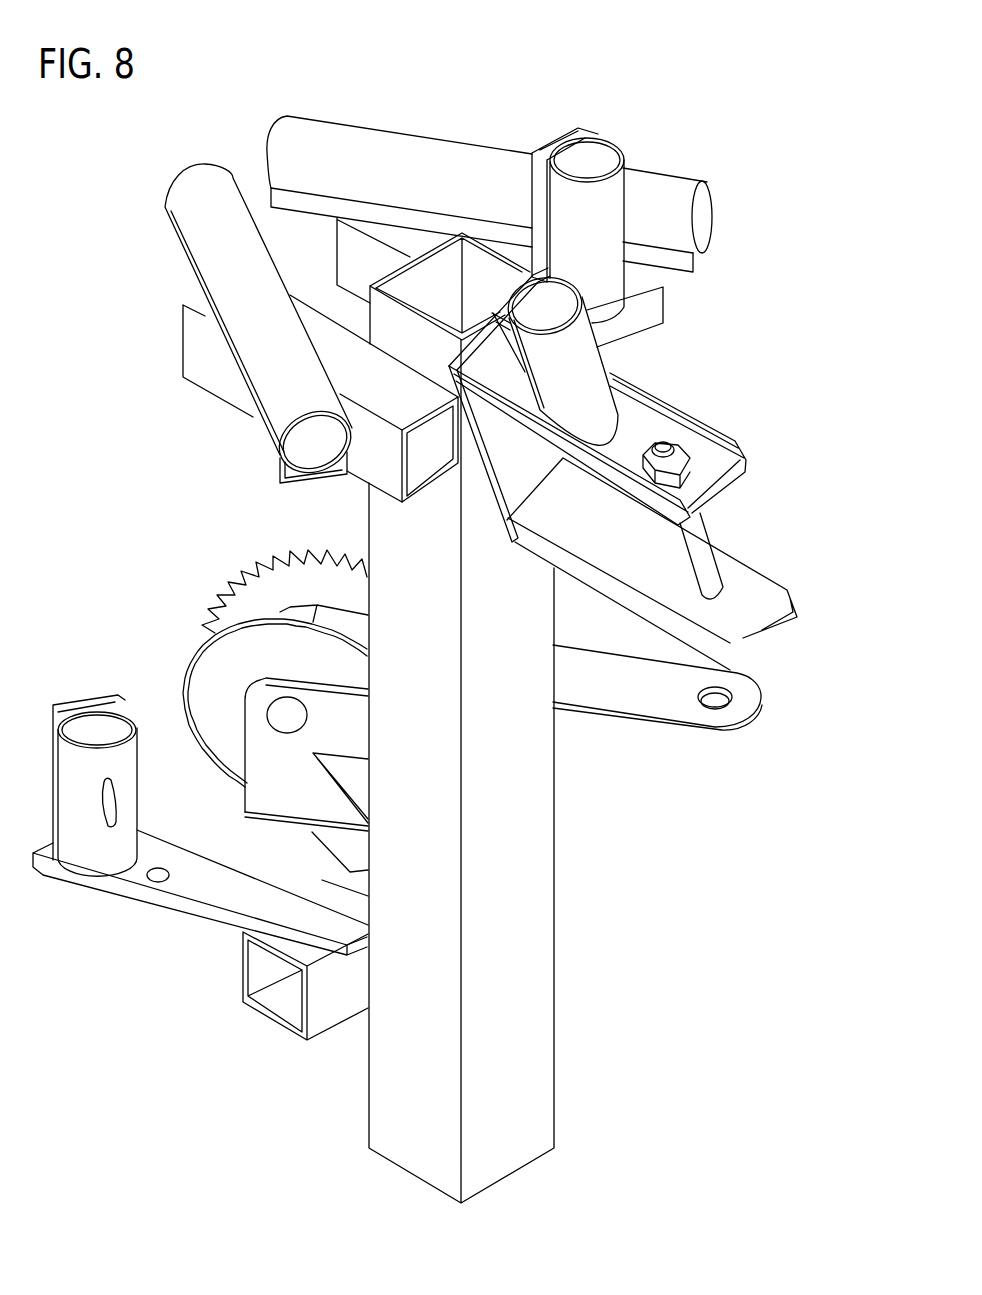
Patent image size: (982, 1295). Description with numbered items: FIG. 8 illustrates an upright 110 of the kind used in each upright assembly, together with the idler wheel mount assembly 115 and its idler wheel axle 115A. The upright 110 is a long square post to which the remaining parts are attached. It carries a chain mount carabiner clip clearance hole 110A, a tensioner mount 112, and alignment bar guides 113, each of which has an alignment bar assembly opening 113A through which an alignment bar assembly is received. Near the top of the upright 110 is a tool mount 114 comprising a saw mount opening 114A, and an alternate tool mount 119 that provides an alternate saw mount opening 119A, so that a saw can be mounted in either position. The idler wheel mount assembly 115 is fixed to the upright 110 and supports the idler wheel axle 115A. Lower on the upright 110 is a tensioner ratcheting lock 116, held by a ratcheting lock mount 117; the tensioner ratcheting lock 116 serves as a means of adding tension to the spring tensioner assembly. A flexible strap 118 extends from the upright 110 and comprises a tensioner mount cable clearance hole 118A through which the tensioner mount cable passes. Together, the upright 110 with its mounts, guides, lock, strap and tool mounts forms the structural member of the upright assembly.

The upright 110 is at (540, 962).
The chain mount carabiner clip clearance hole 110A is at (155, 882).
The tensioner mount 112 is at (100, 820).
The alignment bar guide 113 is at (263, 330).
The alignment bar assembly opening 113A is at (302, 447).
The tool mount 114 is at (485, 227).
The saw mount opening 114A is at (548, 300).
The idler wheel mount assembly 115 is at (667, 403).
The idler wheel axle 115A is at (707, 543).
The tensioner ratcheting lock 116 is at (222, 618).
The ratcheting lock mount 117 is at (260, 792).
The flexible strap 118 is at (706, 726).
The tensioner mount cable clearance hole 118A is at (715, 703).
The alternate tool mount 119 is at (625, 147).
The alternate saw mount opening 119A is at (580, 153).